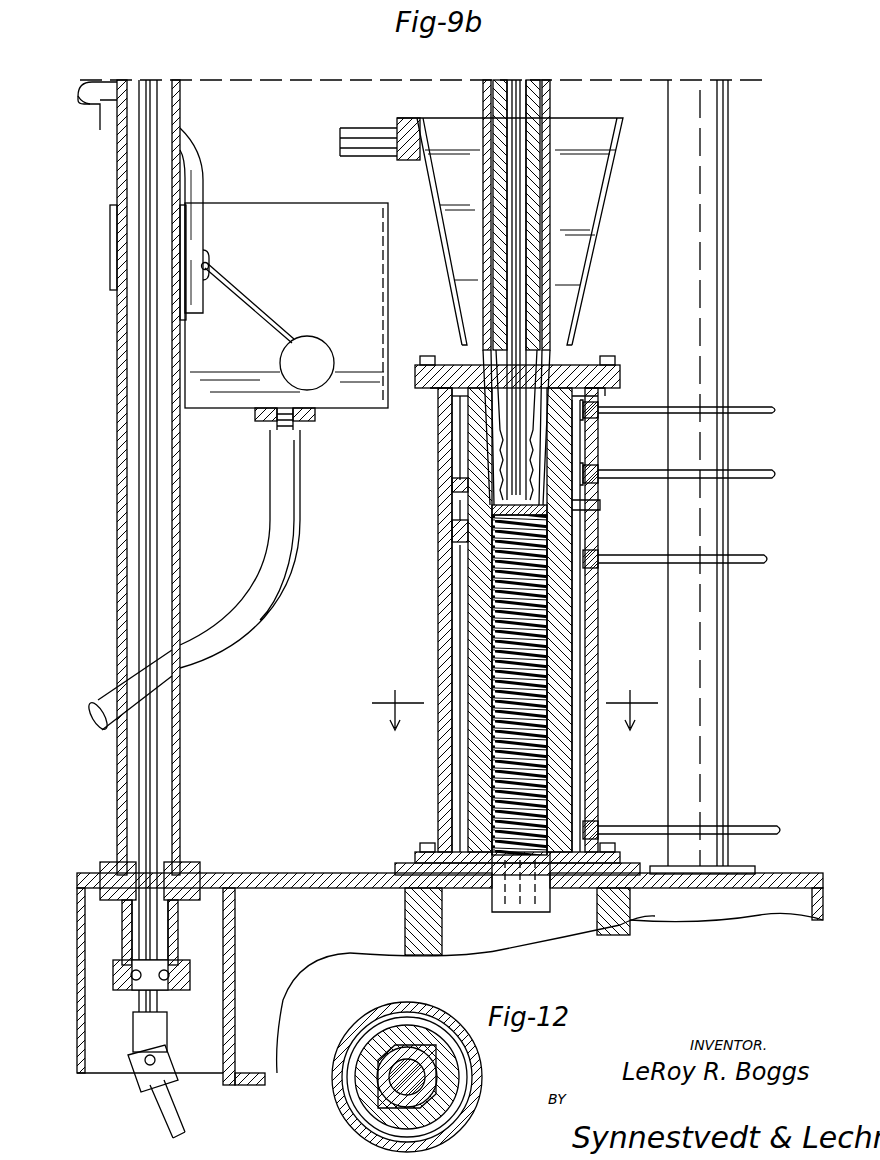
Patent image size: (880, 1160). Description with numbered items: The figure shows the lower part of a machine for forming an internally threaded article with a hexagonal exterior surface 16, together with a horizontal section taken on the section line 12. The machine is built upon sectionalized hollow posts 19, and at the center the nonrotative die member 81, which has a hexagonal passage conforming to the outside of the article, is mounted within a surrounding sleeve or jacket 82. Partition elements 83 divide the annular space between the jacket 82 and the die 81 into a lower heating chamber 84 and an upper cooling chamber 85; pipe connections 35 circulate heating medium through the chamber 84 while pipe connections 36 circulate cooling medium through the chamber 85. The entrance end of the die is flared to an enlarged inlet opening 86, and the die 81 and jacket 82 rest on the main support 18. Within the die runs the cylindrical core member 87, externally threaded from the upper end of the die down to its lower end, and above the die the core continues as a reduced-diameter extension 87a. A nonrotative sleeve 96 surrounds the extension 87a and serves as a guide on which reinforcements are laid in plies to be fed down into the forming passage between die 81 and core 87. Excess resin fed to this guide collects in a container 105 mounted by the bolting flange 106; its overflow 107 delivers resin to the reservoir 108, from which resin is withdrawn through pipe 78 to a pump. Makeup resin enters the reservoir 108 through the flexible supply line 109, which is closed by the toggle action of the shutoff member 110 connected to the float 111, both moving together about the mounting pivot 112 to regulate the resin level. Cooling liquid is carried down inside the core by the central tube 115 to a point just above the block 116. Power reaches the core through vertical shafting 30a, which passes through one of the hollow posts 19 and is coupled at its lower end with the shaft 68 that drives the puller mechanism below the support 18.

In FIG. 9B, the sectionalized hollow post 19 is at (117, 425).
In FIG. 9B, the supply line 109 is at (98, 126).
In FIG. 9B, the vertical shafting 30a is at (140, 772).
In FIG. 9B, the shutoff member 110 is at (206, 250).
In FIG. 9B, the mounting pivot 112 is at (210, 266).
In FIG. 9B, the float 111 is at (328, 338).
In FIG. 9B, the reservoir 108 is at (245, 420).
In FIG. 9B, the pipe 78 is at (200, 660).
In FIG. 9B, the container 105 is at (592, 255).
In FIG. 9B, the overflow 107 is at (366, 128).
In FIG. 9B, the nonrotative sleeve 96 is at (545, 108).
In FIG. 9B, the core extension 87a is at (540, 305).
In FIG. 9B, the central tube 115 is at (521, 198).
In FIG. 9B, the bolting flange 106 is at (450, 364).
In FIG. 9B, the sleeve or jacket 82 is at (438, 596).
In FIG. 12, the sleeve or jacket 82 is at (462, 1130).
In FIG. 9B, the die member 81 is at (478, 776).
In FIG. 12, the die member 81 is at (378, 1035).
In FIG. 9B, the lower heating chamber 84 is at (578, 640).
In FIG. 12, the lower heating chamber 84 is at (450, 1020).
In FIG. 9B, the enlarged inlet opening 86 is at (476, 404).
In FIG. 9B, the partition element 83 is at (452, 538).
In FIG. 9B, the upper cooling chamber 85 is at (578, 444).
In FIG. 9B, the block 116 is at (520, 510).
In FIG. 9B, the core member 87 is at (540, 592).
In FIG. 12, the core member 87 is at (385, 1095).
In FIG. 9B, the hexagonal exterior surface 16 is at (552, 900).
In FIG. 12, the hexagonal exterior surface 16 is at (390, 1077).
In FIG. 9B, the pipe connections 36 is at (784, 410).
In FIG. 9B, the pipe connections 35 is at (750, 568).
In FIG. 9B, the section line 12 is at (515, 706).
In FIG. 9B, the main support 18 is at (230, 1020).
In FIG. 9B, the shaft 68 is at (158, 1125).